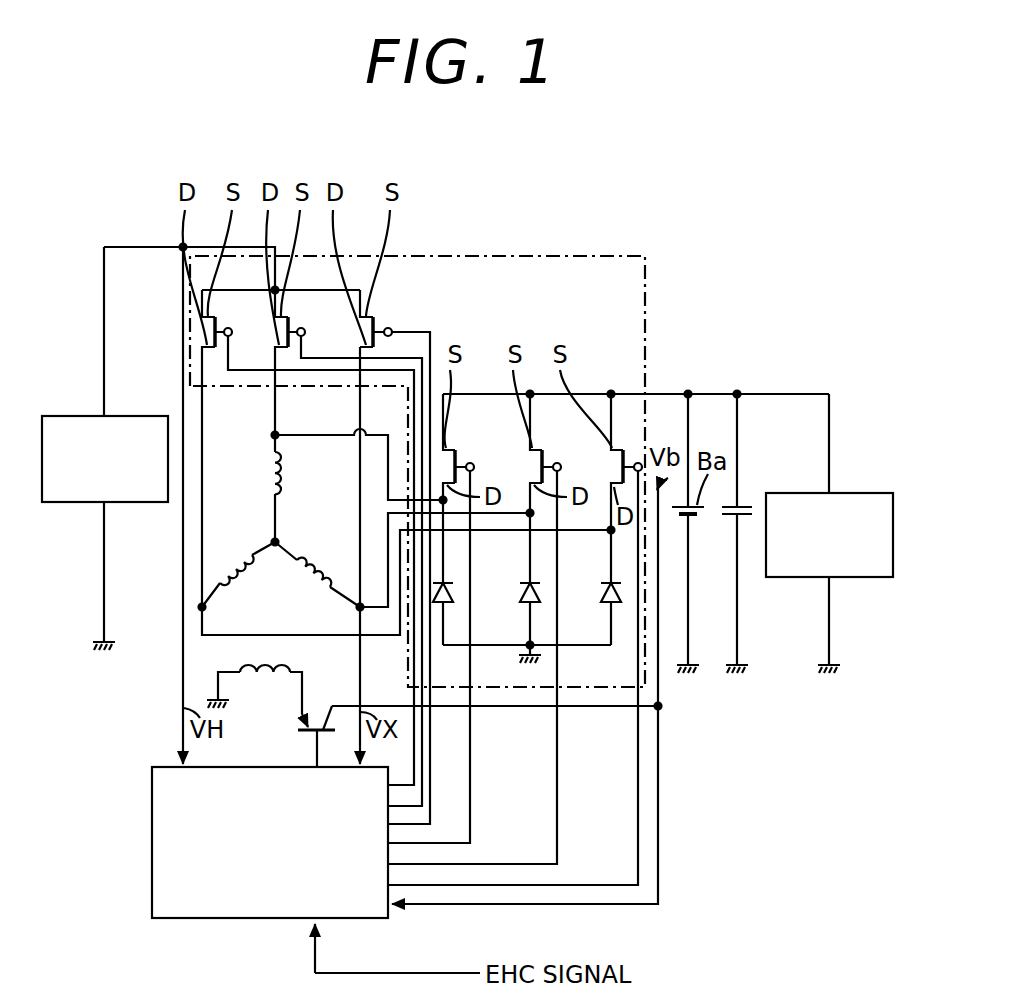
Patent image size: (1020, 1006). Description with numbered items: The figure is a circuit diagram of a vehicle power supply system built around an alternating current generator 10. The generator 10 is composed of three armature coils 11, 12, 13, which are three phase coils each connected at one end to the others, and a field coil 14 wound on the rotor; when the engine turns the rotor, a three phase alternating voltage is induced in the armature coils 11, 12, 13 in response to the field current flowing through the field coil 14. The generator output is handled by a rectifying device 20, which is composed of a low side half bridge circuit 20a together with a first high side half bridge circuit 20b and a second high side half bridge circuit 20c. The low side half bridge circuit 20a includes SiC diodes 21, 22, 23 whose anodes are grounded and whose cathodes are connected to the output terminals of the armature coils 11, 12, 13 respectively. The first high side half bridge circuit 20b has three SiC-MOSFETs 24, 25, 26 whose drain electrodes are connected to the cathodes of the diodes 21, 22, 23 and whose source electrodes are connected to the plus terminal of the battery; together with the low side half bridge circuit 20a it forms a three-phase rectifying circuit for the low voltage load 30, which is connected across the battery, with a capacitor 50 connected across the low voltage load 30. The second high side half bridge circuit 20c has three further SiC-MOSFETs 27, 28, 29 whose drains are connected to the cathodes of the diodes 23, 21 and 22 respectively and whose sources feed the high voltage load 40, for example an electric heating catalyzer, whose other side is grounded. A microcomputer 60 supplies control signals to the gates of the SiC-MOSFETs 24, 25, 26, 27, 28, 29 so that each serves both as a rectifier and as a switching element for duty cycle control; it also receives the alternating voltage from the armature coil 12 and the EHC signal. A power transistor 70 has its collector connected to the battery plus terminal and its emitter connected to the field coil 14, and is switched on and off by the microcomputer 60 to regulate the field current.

The alternating current generator 10 is at (196, 665).
The armature coil 11 is at (288, 472).
The armature coil 12 is at (313, 563).
The armature coil 13 is at (238, 562).
The field coil 14 is at (262, 680).
The rectifying device 20 is at (517, 252).
The low side half bridge circuit 20a is at (620, 635).
The first high side half bridge circuit 20b is at (628, 421).
The second high side half bridge circuit 20c is at (402, 281).
The diode 21 is at (450, 582).
The diode 22 is at (535, 581).
The diode 23 is at (601, 584).
The SiC-MOSFET 24 is at (452, 448).
The SiC-MOSFET 25 is at (540, 450).
The SiC-MOSFET 26 is at (613, 453).
The SiC-MOSFET 27 is at (218, 317).
The SiC-MOSFET 28 is at (291, 317).
The SiC-MOSFET 29 is at (376, 317).
The low voltage load 30 is at (845, 493).
The high voltage load 40 is at (87, 415).
The capacitor 50 is at (742, 505).
The microcomputer 60 is at (197, 918).
The power transistor 70 is at (306, 731).